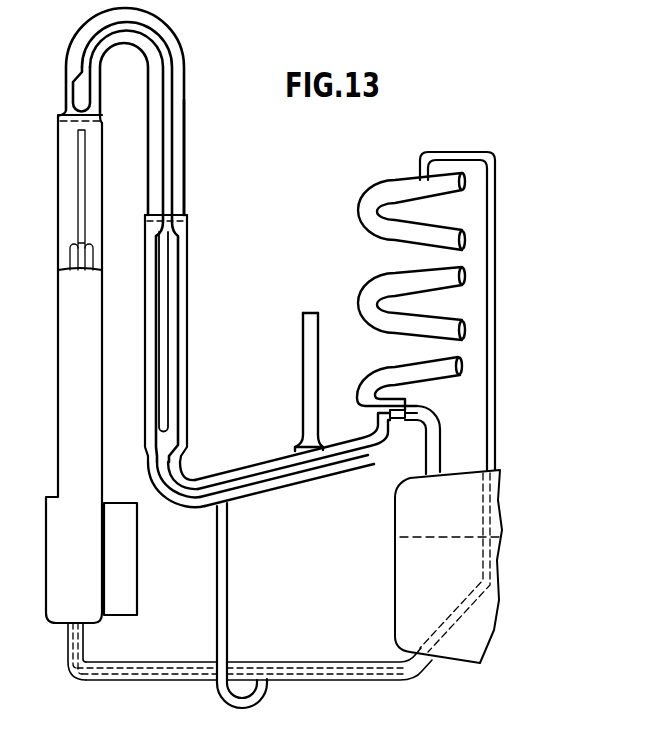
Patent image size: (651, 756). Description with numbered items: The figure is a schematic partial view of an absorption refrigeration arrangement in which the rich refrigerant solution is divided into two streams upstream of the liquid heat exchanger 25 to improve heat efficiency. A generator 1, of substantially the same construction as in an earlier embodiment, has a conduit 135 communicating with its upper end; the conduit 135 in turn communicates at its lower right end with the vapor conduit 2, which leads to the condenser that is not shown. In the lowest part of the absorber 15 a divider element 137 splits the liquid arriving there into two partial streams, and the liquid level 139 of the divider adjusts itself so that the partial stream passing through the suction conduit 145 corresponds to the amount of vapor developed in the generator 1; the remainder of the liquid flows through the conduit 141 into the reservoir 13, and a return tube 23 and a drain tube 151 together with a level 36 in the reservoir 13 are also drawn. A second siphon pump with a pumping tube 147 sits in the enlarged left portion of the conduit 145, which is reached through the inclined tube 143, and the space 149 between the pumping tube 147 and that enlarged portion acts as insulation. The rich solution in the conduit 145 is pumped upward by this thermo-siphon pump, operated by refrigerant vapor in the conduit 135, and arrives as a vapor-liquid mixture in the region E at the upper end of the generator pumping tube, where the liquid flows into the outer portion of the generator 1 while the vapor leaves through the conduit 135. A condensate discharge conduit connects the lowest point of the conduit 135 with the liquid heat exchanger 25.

The region at upper end of generator pumping tube E is at (104, 122).
The generator 1 is at (126, 506).
The vapor conduit 2 is at (303, 312).
The absorber 15 is at (363, 299).
The connecting tube 23 is at (497, 254).
The space 149 is at (177, 257).
The pumping tube 147 is at (169, 296).
The conduit 135 is at (188, 343).
The liquid level 139 is at (402, 399).
The conduit 141 is at (438, 422).
The divider element 137 is at (405, 420).
The inclined tube 143 is at (358, 448).
The suction conduit 145 is at (248, 490).
The drain tube 151 is at (228, 578).
The liquid level 36 is at (445, 536).
The reservoir 13 is at (407, 578).
The liquid heat exchanger 25 is at (333, 664).